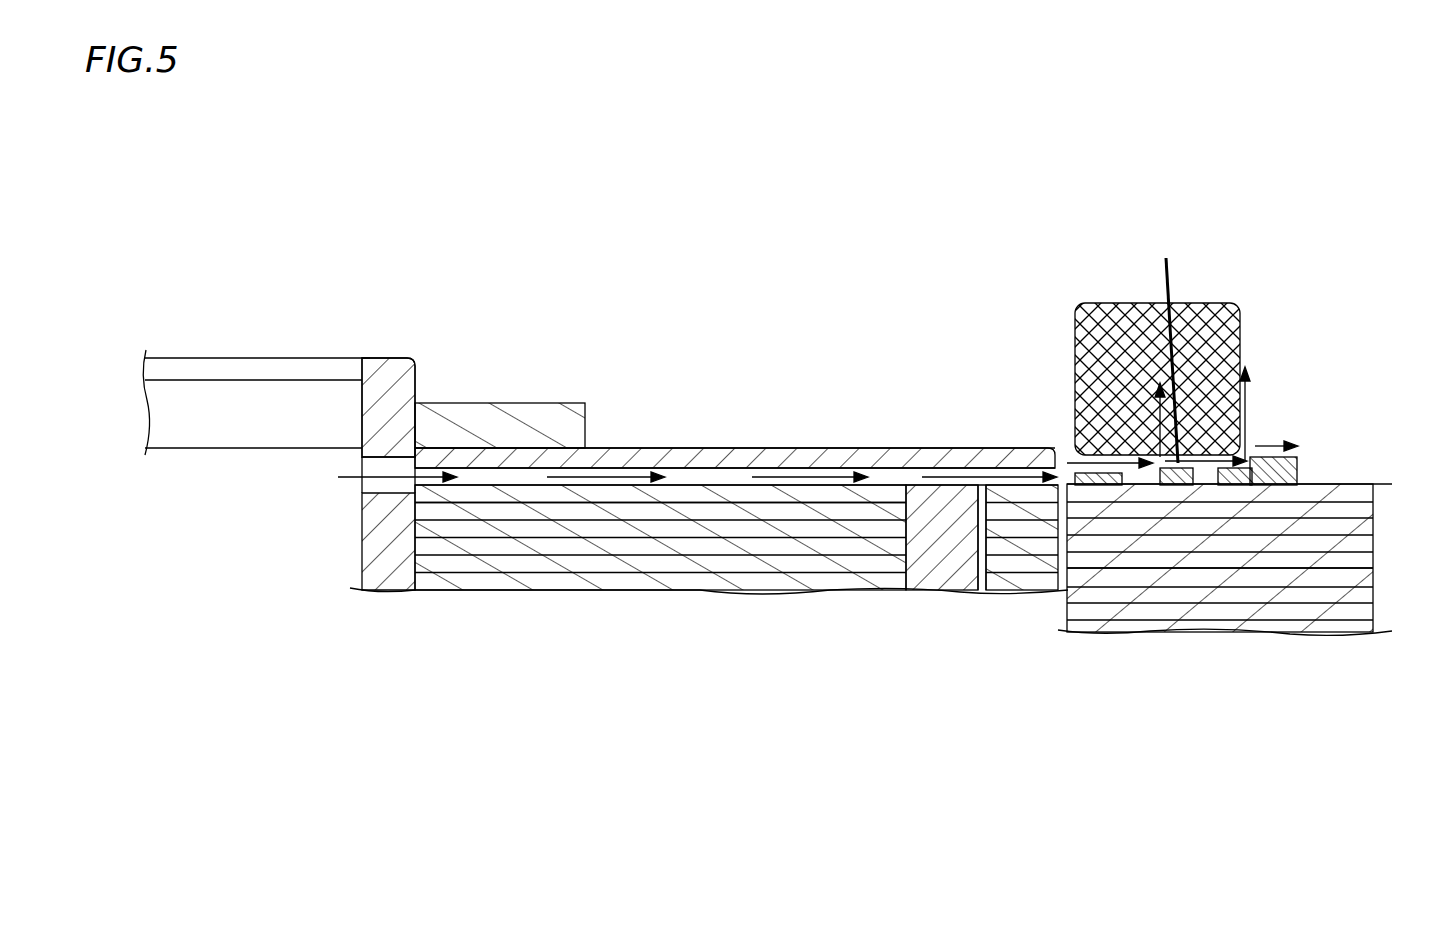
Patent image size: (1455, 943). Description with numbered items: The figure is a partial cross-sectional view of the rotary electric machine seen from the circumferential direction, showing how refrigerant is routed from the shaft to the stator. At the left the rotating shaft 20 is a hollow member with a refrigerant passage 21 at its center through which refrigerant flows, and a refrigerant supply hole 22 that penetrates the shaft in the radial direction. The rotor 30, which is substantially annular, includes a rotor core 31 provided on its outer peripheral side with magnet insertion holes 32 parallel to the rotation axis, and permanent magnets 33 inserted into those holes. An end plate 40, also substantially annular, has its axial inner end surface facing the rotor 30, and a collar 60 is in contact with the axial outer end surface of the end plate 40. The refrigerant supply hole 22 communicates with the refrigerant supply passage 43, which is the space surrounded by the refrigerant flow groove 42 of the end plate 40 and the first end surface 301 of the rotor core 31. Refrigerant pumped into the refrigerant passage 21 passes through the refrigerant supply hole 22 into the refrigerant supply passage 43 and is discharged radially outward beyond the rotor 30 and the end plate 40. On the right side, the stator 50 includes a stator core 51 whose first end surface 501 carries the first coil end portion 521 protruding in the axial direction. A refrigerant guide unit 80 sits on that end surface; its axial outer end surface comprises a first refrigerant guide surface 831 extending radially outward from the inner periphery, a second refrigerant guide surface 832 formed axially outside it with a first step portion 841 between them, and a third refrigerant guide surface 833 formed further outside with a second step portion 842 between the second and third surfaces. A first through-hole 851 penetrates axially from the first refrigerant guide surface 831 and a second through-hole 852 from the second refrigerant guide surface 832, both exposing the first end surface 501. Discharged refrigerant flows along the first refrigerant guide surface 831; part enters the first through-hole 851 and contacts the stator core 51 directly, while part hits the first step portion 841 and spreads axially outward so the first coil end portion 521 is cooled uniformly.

The rotating shaft 20 is at (270, 357).
The refrigerant passage 21 is at (349, 537).
The refrigerant supply hole 22 is at (382, 470).
The collar 60 is at (507, 403).
The end plate 40 is at (743, 447).
The refrigerant flow groove 42 is at (670, 470).
The refrigerant supply passage 43 is at (713, 450).
The rotor 30 is at (709, 586).
The first end surface of the rotor core 301 is at (465, 480).
The rotor core 31 is at (580, 547).
The permanent magnet 33 is at (935, 500).
The magnet insertion hole 32 is at (981, 583).
The first coil end portion 521 is at (1110, 302).
The second refrigerant guide surface 832 is at (1170, 342).
The first refrigerant guide surface 831 is at (1065, 462).
The first step portion 841 is at (1152, 469).
The second step portion 842 is at (1248, 460).
The third refrigerant guide surface 833 is at (1268, 442).
The refrigerant guide unit 80 is at (1301, 473).
The first through-hole 851 is at (1131, 471).
The second through-hole 852 is at (1213, 471).
The stator 50 is at (1256, 580).
The first end surface of the stator core 501 is at (1373, 484).
The stator core 51 is at (1345, 583).